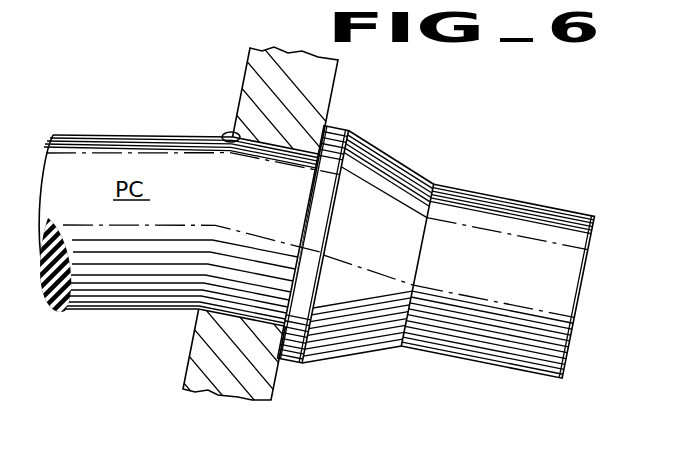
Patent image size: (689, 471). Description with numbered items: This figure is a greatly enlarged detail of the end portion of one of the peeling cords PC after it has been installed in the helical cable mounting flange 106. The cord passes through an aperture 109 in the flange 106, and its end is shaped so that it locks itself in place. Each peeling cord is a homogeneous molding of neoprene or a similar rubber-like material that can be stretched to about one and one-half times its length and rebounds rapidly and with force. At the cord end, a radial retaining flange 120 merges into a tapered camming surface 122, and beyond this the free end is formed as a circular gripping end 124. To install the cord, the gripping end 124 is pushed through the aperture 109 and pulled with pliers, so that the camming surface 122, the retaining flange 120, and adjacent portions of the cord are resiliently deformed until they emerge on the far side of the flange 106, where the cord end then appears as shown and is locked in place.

The helical cable mounting flange 106 is at (246, 76).
The aperture 109 is at (227, 134).
The radial retaining flange 120 is at (336, 128).
The tapered camming surface 122 is at (391, 156).
The gripping end 124 is at (533, 210).